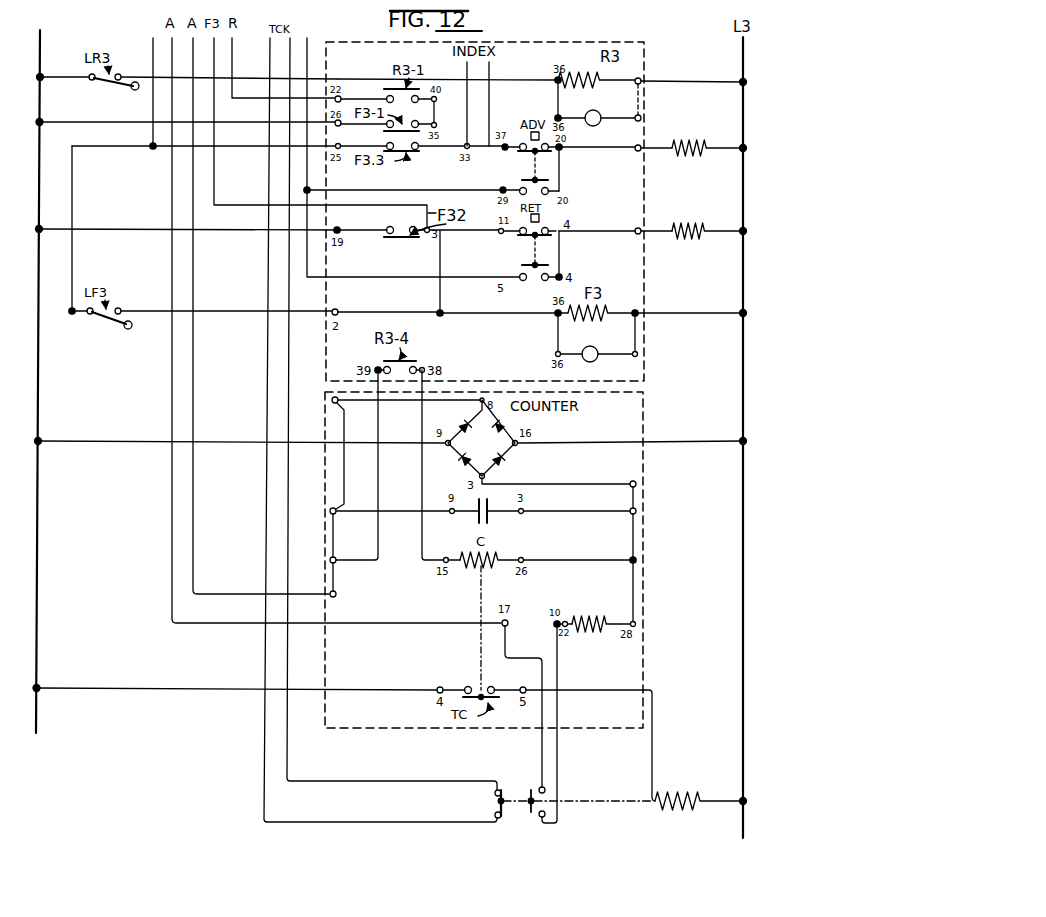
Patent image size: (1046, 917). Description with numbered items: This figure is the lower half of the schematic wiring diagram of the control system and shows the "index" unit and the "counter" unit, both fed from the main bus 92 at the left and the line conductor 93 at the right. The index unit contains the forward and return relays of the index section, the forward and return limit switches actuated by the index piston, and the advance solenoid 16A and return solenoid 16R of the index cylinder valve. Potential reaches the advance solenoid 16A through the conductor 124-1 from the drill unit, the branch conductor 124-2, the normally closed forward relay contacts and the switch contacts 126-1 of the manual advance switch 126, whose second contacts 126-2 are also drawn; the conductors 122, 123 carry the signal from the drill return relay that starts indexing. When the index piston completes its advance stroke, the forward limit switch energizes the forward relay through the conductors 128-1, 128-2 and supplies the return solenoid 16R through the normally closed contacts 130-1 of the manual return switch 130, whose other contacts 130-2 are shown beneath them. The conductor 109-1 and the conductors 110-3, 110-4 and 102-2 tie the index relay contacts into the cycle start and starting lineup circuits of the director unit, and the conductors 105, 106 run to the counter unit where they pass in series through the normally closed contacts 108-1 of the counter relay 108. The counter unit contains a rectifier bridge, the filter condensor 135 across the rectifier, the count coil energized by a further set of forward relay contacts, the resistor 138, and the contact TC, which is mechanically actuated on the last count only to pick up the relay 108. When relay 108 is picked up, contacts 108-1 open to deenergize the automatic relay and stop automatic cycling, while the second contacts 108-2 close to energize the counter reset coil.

The main bus 92 is at (39, 370).
The conductor 93 is at (307, 45).
The conductor 102-2 is at (229, 230).
The conductor 105 is at (283, 68).
The conductor 106 is at (289, 118).
The counter solenoid 108 is at (688, 814).
The normally closed switch contacts 108-1 is at (496, 801).
The contacts 108-2 is at (539, 821).
The conductor 109-1 is at (214, 177).
The conductor 110-3 is at (328, 100).
The conductor 110-4 is at (113, 122).
The conductor 122 is at (489, 75).
The conductor 123 is at (465, 89).
The conductor 124-1 is at (150, 42).
The conductor 124-2 is at (181, 146).
The manual switch 126 is at (528, 134).
The switch contacts 126-1 is at (524, 165).
The contact of advance switch 126-2 is at (550, 194).
The conductor 128-1 is at (74, 263).
The conductor 128-2 is at (228, 312).
The manual switch 130 is at (552, 226).
The normally closed contacts 130-1 is at (525, 236).
The contact of return switch 130-2 is at (531, 274).
The condensor 135 is at (494, 518).
The resistor 138 is at (590, 618).
The advance solenoid 16A is at (651, 138).
The return solenoid 16R is at (651, 222).